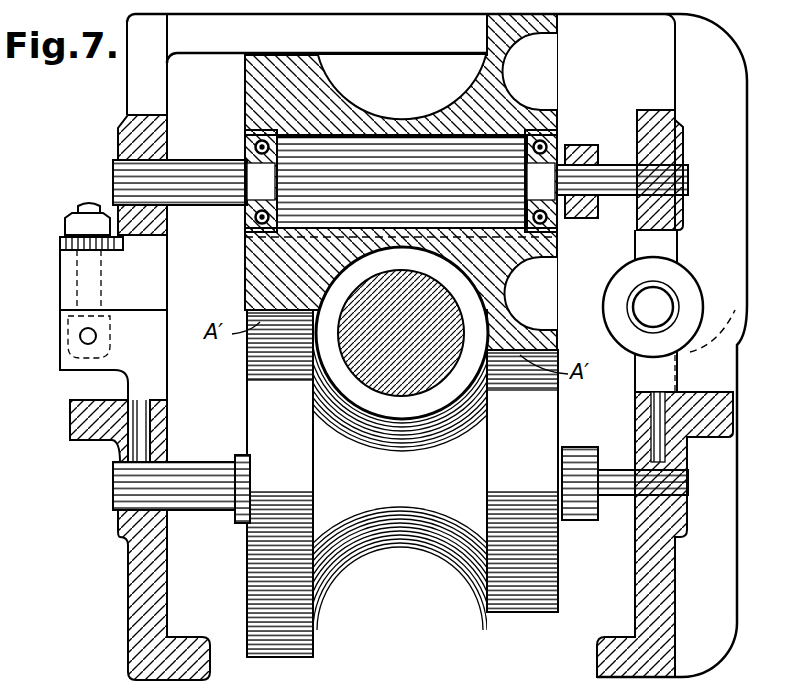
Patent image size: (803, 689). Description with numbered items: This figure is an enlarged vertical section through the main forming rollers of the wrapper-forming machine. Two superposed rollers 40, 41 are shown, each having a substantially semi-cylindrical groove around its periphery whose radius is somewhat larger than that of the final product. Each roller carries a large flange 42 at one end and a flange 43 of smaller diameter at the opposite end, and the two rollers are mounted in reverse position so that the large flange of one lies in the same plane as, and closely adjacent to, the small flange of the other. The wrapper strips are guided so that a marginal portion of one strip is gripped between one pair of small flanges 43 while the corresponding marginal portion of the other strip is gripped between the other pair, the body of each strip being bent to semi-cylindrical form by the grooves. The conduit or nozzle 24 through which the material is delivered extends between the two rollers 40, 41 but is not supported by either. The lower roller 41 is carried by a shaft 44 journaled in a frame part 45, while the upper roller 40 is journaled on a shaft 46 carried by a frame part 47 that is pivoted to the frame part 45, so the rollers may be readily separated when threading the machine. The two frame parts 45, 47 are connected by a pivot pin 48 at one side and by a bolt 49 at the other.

The conduit or nozzle 24 is at (403, 398).
The upper forming roller 40 is at (402, 87).
The lower forming roller 41 is at (403, 540).
The large flange 42 is at (492, 27).
The small flange 43 is at (255, 70).
The shaft 44 is at (204, 505).
The frame part 45 is at (135, 580).
The shaft 46 is at (191, 165).
The frame part 47 is at (147, 97).
The pivot pin 48 is at (650, 312).
The bolt 49 is at (92, 210).